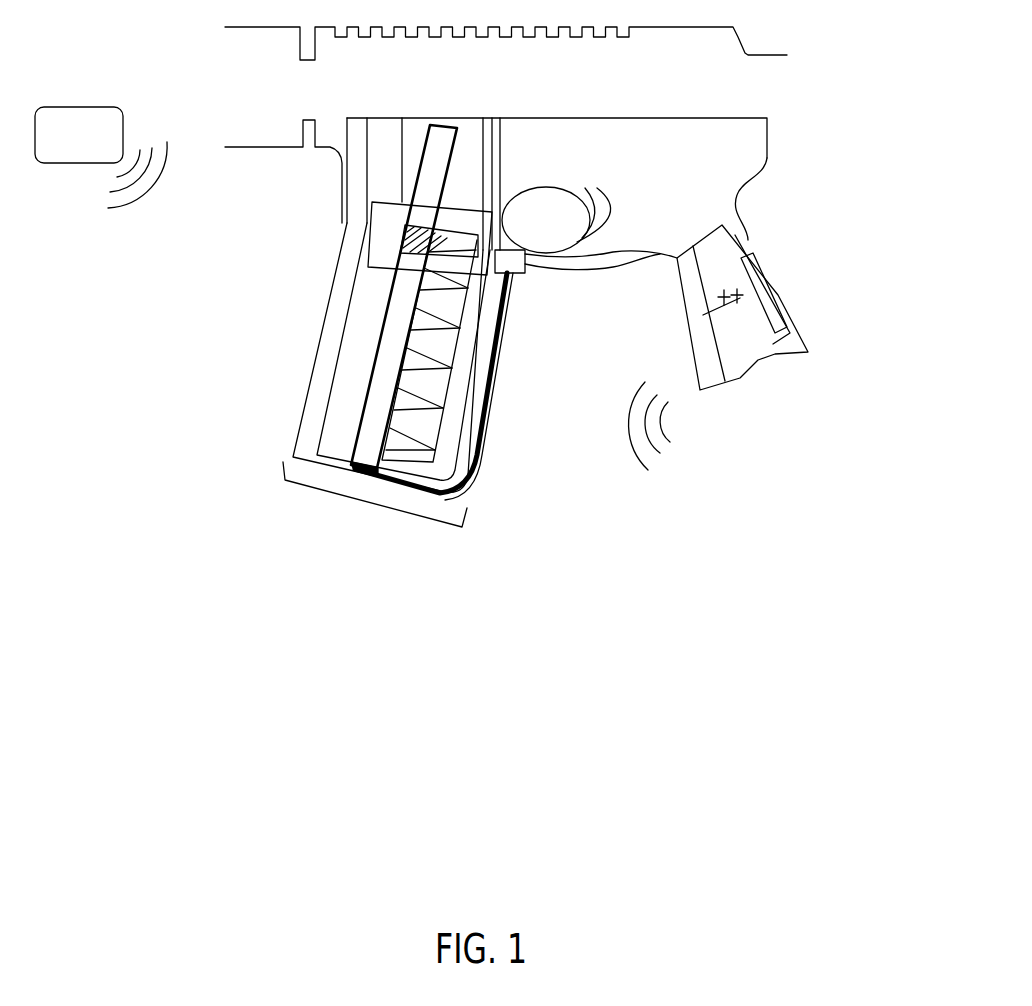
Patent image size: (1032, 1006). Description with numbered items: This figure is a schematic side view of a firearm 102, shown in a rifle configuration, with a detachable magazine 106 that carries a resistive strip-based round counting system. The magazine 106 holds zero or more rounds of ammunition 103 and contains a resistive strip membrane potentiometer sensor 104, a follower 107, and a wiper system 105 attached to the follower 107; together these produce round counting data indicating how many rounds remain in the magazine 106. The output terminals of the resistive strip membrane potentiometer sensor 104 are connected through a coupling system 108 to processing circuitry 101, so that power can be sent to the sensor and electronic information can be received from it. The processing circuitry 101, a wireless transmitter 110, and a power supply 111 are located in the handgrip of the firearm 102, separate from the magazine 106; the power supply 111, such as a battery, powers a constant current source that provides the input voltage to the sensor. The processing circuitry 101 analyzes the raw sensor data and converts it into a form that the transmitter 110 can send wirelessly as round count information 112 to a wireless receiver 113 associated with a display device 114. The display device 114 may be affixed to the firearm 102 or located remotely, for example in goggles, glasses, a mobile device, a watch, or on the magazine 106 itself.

The processing circuitry 101 is at (747, 230).
The firearm 102 is at (795, 77).
The rounds of ammunition 103 is at (487, 387).
The resistive strip membrane potentiometer sensor 104 is at (387, 367).
The wiper system 105 is at (375, 238).
The magazine 106 is at (369, 502).
The follower 107 is at (385, 243).
The coupling system 108 is at (510, 273).
The wireless transmitter 110 is at (803, 353).
The power supply 111 is at (777, 295).
The round count information 112 is at (690, 412).
The wireless receiver 113 is at (98, 206).
The display device 114 is at (79, 135).